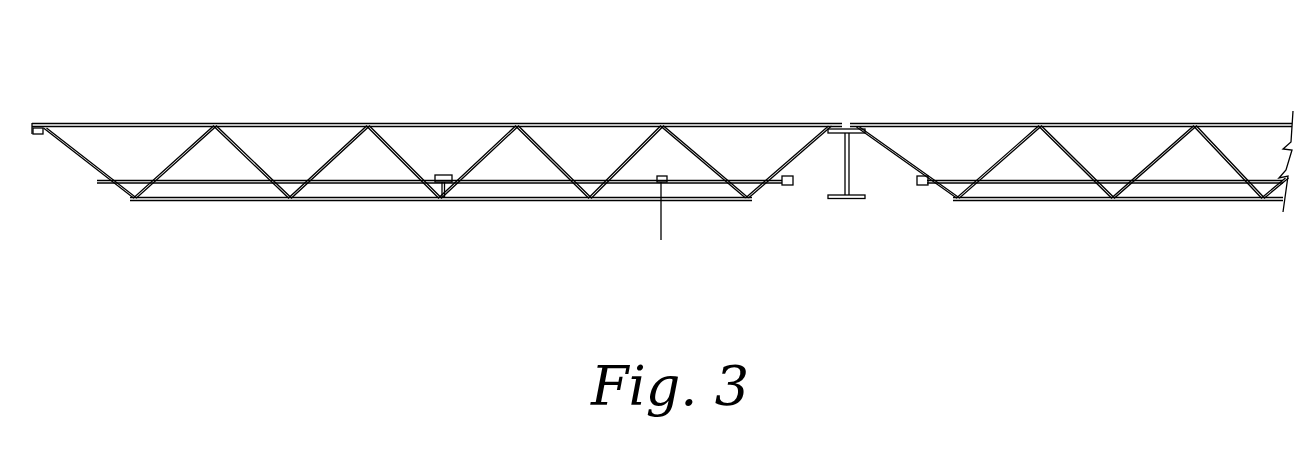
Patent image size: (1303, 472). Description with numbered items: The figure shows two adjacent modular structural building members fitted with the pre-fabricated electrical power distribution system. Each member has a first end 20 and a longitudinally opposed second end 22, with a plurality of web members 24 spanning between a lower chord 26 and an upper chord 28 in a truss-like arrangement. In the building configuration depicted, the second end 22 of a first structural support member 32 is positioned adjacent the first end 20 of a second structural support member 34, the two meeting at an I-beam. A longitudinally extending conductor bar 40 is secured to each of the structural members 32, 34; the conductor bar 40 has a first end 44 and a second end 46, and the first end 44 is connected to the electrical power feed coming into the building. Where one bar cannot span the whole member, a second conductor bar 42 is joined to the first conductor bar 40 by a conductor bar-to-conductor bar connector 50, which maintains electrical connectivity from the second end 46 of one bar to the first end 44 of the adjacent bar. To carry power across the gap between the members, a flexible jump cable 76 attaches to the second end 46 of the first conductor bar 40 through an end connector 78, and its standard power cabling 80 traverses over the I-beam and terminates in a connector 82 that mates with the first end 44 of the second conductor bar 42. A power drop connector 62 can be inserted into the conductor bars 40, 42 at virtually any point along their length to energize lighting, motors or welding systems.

The first end 20 is at (37, 135).
The second end 22 is at (836, 92).
The web members 24 is at (178, 128).
The lower chord 26 is at (265, 203).
The upper chord 28 is at (543, 123).
The first structural support member 32 is at (756, 122).
The second structural support member 34 is at (1093, 122).
The conductor bar 40 is at (250, 184).
The second conductor bar 42 is at (540, 184).
The first end 44 is at (103, 184).
The second end 46 is at (430, 175).
The conductor bar-to-conductor bar connector 50 is at (440, 199).
The power drop connector 62 is at (656, 184).
The flexible jump cable 76 is at (906, 186).
The end connector 78 is at (786, 186).
The standard power cabling 80 is at (812, 150).
The connector 82 is at (926, 188).